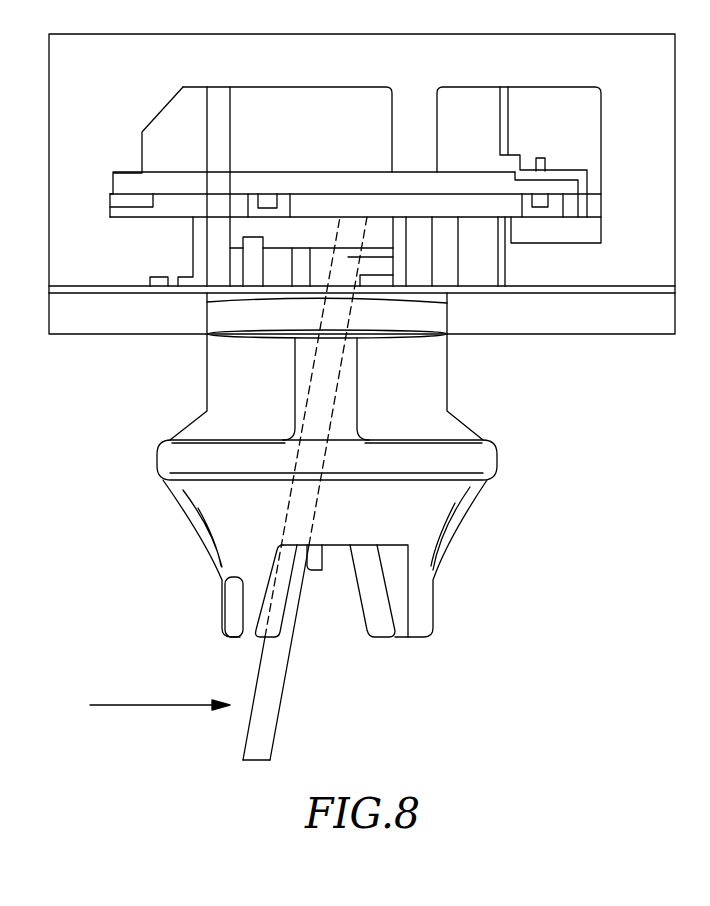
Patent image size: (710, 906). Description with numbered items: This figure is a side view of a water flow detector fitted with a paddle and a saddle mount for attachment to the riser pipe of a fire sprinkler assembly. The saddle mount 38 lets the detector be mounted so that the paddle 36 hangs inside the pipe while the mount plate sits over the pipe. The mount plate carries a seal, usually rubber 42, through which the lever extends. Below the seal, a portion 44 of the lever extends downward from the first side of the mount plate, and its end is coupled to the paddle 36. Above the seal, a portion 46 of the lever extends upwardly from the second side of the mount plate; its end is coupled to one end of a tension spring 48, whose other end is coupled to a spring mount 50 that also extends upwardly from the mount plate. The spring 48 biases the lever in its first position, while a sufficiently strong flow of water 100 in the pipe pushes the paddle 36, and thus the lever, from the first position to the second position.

The paddle 36 is at (280, 705).
The saddle mount 38 is at (443, 534).
The seal 42 is at (375, 293).
The lever portion 44 is at (317, 352).
The lever portion 46 is at (335, 240).
The tension spring 48 is at (377, 243).
The spring mount 50 is at (445, 265).
The flow of water 100 is at (158, 705).